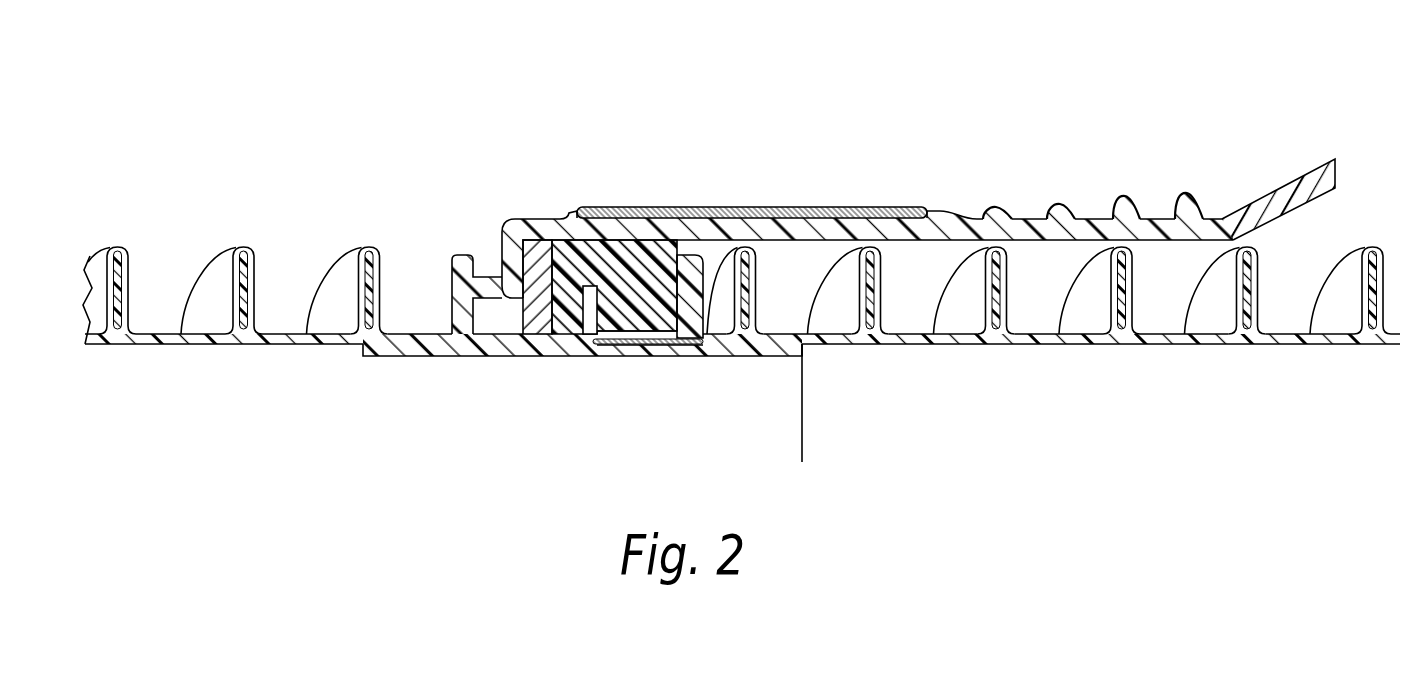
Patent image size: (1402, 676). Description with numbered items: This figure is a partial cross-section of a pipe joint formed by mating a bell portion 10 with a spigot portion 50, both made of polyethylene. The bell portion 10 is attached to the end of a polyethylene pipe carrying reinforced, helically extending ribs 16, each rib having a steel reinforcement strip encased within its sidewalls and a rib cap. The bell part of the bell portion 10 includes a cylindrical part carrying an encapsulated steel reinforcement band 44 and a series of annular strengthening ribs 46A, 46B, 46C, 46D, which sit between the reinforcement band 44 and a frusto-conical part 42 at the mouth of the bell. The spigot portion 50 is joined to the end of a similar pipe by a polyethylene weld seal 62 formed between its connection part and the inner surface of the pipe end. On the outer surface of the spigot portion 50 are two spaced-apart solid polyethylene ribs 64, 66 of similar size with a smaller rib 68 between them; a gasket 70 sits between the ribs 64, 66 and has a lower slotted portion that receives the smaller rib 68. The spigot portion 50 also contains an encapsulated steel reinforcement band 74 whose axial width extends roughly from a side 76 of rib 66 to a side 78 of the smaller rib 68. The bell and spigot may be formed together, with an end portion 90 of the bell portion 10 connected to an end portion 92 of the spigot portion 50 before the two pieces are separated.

The bell portion 10 is at (881, 260).
The helically extending ribs 16 is at (345, 237).
The frusto-conical part 42 is at (1304, 155).
The steel reinforcement band 44 is at (813, 212).
The annular strengthening rib 46A is at (1000, 206).
The annular strengthening rib 46B is at (1068, 203).
The annular strengthening rib 46C is at (1133, 196).
The annular strengthening rib 46D is at (1195, 205).
The spigot portion 50 is at (635, 372).
The weld seal 62 is at (807, 347).
The solid PE rib 64 is at (542, 262).
The solid PE rib 66 is at (647, 223).
The smaller rib 68 is at (558, 322).
The gasket 70 is at (646, 260).
The steel reinforcement band 74 is at (653, 343).
The side of rib 76 is at (718, 296).
The side of smaller rib 78 is at (610, 297).
The end portion of the bell portion 90 is at (370, 357).
The end portion of the spigot portion 92 is at (797, 355).